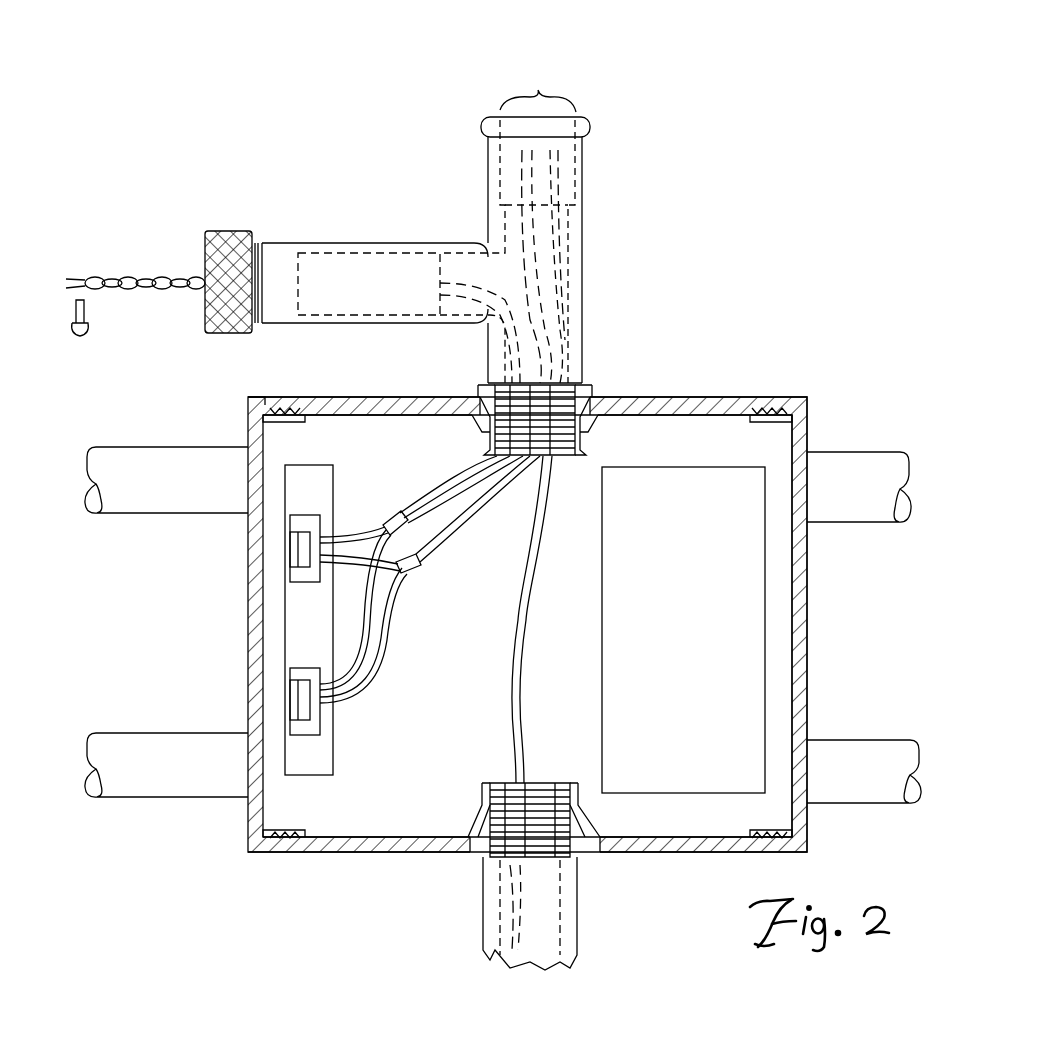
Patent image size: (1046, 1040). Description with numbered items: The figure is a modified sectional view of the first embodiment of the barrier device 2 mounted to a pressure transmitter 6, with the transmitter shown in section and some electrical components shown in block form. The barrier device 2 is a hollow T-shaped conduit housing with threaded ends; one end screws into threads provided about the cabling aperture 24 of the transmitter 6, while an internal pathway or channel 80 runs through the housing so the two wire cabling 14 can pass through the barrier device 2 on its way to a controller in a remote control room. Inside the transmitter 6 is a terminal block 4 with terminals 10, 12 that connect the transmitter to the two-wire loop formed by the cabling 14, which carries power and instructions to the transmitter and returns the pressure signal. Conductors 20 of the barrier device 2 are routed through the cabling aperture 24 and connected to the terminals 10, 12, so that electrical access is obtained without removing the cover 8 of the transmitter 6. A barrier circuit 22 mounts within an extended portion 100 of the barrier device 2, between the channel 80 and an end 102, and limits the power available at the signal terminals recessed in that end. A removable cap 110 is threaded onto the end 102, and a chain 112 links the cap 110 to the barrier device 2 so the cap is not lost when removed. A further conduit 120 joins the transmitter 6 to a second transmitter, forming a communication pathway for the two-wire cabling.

The barrier device 2 is at (580, 252).
The terminal block 4 is at (305, 475).
The pressure transmitter 6 is at (665, 400).
The cover 8 is at (255, 410).
The terminal 10 is at (300, 690).
The terminal 12 is at (300, 540).
The two wire cabling 14 is at (425, 548).
The conductors 20 is at (403, 520).
The barrier circuit 22 is at (385, 300).
The cabling aperture 24 is at (580, 400).
The internal pathway or channel 80 is at (538, 86).
The extended portion 100 is at (380, 243).
The end 102 is at (258, 248).
The removable cap 110 is at (225, 232).
The chain 112 is at (150, 270).
The conduit 120 is at (580, 905).